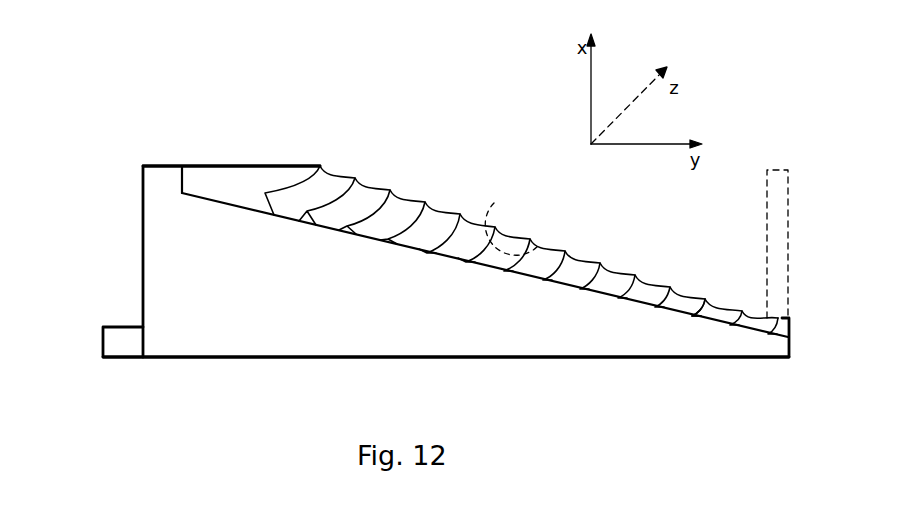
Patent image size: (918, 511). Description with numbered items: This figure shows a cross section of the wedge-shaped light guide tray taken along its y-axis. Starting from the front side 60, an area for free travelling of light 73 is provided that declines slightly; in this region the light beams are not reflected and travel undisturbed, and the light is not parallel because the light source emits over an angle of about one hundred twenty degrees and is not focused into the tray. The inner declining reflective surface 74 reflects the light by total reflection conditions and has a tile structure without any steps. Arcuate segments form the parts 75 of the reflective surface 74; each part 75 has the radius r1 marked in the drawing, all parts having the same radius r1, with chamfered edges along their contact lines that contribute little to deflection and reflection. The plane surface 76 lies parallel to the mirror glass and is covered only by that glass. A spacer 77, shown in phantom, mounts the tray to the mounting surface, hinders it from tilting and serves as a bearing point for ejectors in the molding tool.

The front face 60 is at (142, 192).
The free travelling of light 73 is at (228, 178).
The reflective surface 74 is at (710, 298).
The part 75 is at (585, 260).
The plane surface 76 is at (487, 357).
The spacer 77 is at (780, 177).
The radius r1 is at (512, 235).